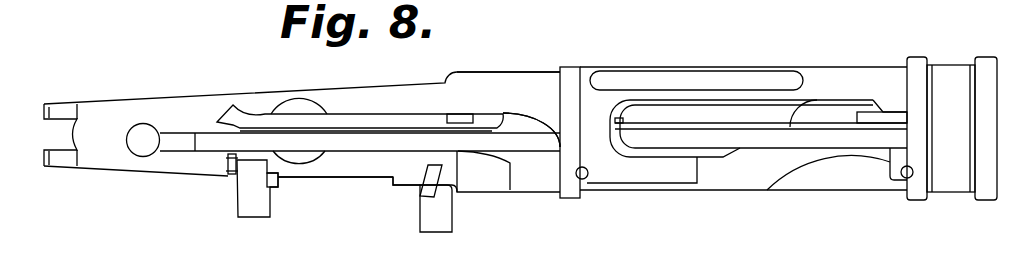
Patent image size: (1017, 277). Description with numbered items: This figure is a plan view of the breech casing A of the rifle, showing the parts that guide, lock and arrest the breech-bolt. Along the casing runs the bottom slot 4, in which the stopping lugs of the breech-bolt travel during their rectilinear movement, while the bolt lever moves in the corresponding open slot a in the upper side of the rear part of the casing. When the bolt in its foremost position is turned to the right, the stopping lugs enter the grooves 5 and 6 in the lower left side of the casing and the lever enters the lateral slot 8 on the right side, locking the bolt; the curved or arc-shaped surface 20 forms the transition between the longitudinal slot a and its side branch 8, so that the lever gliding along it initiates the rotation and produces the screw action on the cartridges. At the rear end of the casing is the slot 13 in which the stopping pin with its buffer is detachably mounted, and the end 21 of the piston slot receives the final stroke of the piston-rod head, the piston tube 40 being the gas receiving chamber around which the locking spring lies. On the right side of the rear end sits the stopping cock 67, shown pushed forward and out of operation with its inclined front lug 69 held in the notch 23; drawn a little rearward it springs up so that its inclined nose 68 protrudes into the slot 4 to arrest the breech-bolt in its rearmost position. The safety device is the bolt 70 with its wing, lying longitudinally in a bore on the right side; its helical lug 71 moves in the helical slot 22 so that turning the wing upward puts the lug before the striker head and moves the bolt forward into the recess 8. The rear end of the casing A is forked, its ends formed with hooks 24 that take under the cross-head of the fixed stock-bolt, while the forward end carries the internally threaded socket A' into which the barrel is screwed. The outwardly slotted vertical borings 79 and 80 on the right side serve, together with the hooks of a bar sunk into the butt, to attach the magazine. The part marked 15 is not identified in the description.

The bottom slot 4 is at (421, 140).
The groove 5 is at (833, 112).
The groove 6 is at (523, 110).
The lateral slot 8 is at (539, 182).
The slot 13 is at (143, 136).
The barrel 15 is at (77, 6).
The curved or arc-shaped surface 20 is at (551, 136).
The end of the piston slot 21 is at (329, 150).
The helical slot 22 is at (425, 172).
The notch 23 is at (292, 179).
The hooks 24 is at (45, 114).
The gas receiving chamber or piston tube 40 is at (23, 10).
The stopping cock 67 is at (239, 206).
The inclined nose 68 is at (250, 162).
The inclined front lug 69 is at (276, 190).
The bolt 70 is at (425, 215).
The helical lug 71 is at (438, 189).
The outwardly slotted vertical boring 79 is at (588, 176).
The outwardly slotted vertical boring 80 is at (903, 178).
The open slot a is at (378, 133).
The breech casing A is at (302, 124).
The internally threaded socket A' is at (952, 115).